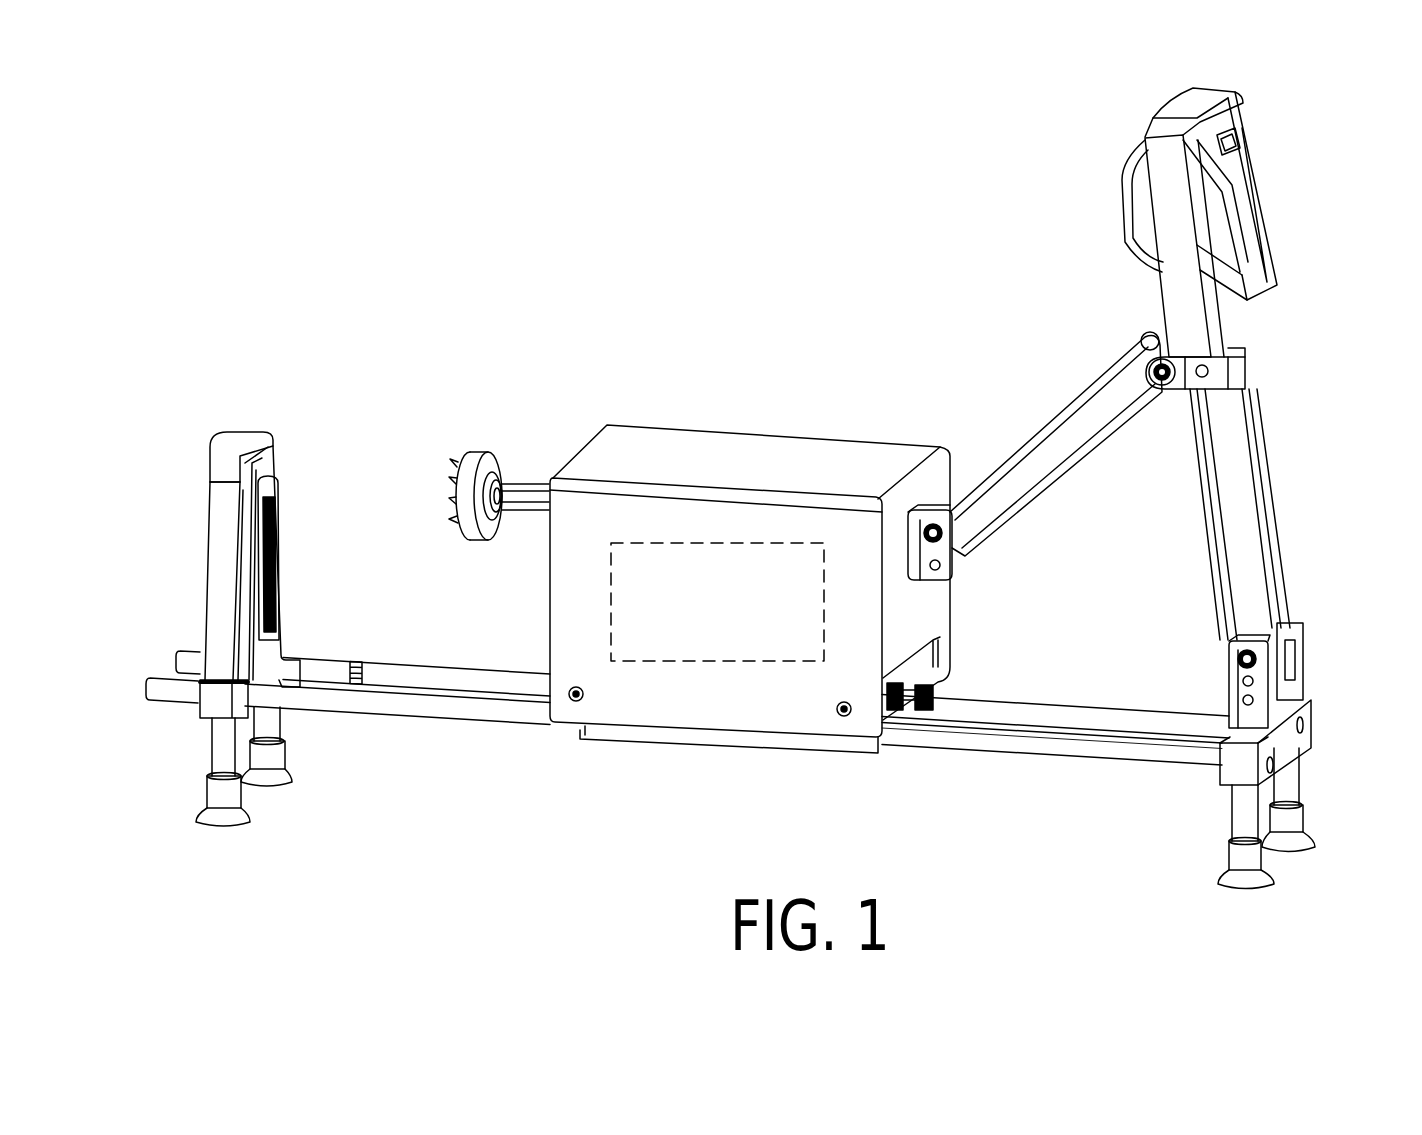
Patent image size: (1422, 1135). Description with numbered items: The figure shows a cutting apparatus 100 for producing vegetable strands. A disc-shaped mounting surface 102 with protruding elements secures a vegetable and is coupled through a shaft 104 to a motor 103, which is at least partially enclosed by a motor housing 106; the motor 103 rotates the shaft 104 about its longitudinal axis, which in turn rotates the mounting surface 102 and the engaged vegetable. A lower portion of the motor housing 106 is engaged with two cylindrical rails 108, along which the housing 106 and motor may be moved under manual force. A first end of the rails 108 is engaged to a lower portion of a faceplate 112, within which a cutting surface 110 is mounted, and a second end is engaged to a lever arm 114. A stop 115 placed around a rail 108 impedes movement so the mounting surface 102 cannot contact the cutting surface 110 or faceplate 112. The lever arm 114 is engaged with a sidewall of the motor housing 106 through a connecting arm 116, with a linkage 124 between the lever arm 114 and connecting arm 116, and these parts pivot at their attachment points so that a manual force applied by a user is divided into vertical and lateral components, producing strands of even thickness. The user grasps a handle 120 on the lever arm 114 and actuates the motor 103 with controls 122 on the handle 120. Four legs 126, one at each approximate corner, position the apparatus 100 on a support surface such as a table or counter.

The cutting apparatus 100 is at (1348, 101).
The mounting surface 102 is at (486, 452).
The motor 103 is at (717, 602).
The shaft 104 is at (527, 484).
The motor housing 106 is at (715, 440).
The rails 108 is at (393, 705).
The cutting surface 110 is at (269, 553).
The faceplate 112 is at (218, 438).
The lever arm 114 is at (1260, 532).
The stop 115 is at (360, 661).
The connecting arm 116 is at (1038, 430).
The handle 120 is at (1158, 127).
The controls 122 is at (1320, 131).
The linkage 124 is at (1182, 378).
The legs 126 is at (1236, 852).